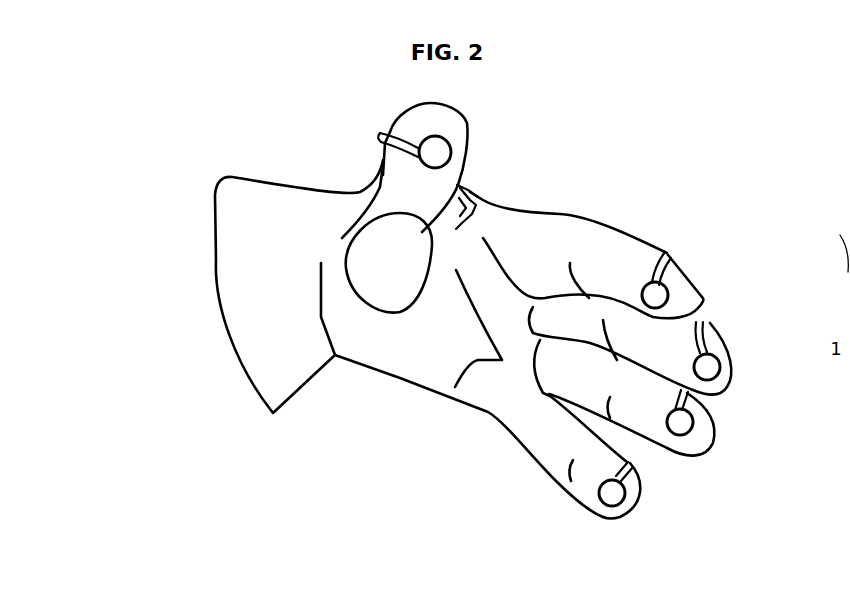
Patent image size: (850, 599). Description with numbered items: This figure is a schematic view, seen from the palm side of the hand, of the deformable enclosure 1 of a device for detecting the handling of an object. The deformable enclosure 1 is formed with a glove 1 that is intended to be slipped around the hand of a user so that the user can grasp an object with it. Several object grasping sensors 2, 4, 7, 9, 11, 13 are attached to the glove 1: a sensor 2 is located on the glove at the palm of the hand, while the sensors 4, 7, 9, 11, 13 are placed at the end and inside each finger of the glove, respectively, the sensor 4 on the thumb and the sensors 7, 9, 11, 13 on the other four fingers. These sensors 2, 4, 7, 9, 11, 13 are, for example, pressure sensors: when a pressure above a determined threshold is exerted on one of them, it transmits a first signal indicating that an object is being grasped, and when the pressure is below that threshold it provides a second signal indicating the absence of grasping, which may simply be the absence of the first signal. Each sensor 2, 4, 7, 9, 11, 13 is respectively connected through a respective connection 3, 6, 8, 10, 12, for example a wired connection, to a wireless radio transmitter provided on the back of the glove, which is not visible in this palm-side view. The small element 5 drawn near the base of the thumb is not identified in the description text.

The deformable enclosure 1 is at (247, 292).
The object grasping sensor 2 is at (390, 259).
The connection 3 is at (383, 133).
The object grasping sensor 4 is at (435, 150).
The thumb bracket 5 is at (468, 207).
The connection 6 is at (668, 254).
The object grasping sensor 7 is at (657, 292).
The connection 8 is at (707, 322).
The object grasping sensor 9 is at (707, 367).
The connection 10 is at (683, 402).
The object grasping sensor 11 is at (680, 422).
The connection 12 is at (630, 465).
The object grasping sensor 13 is at (613, 493).